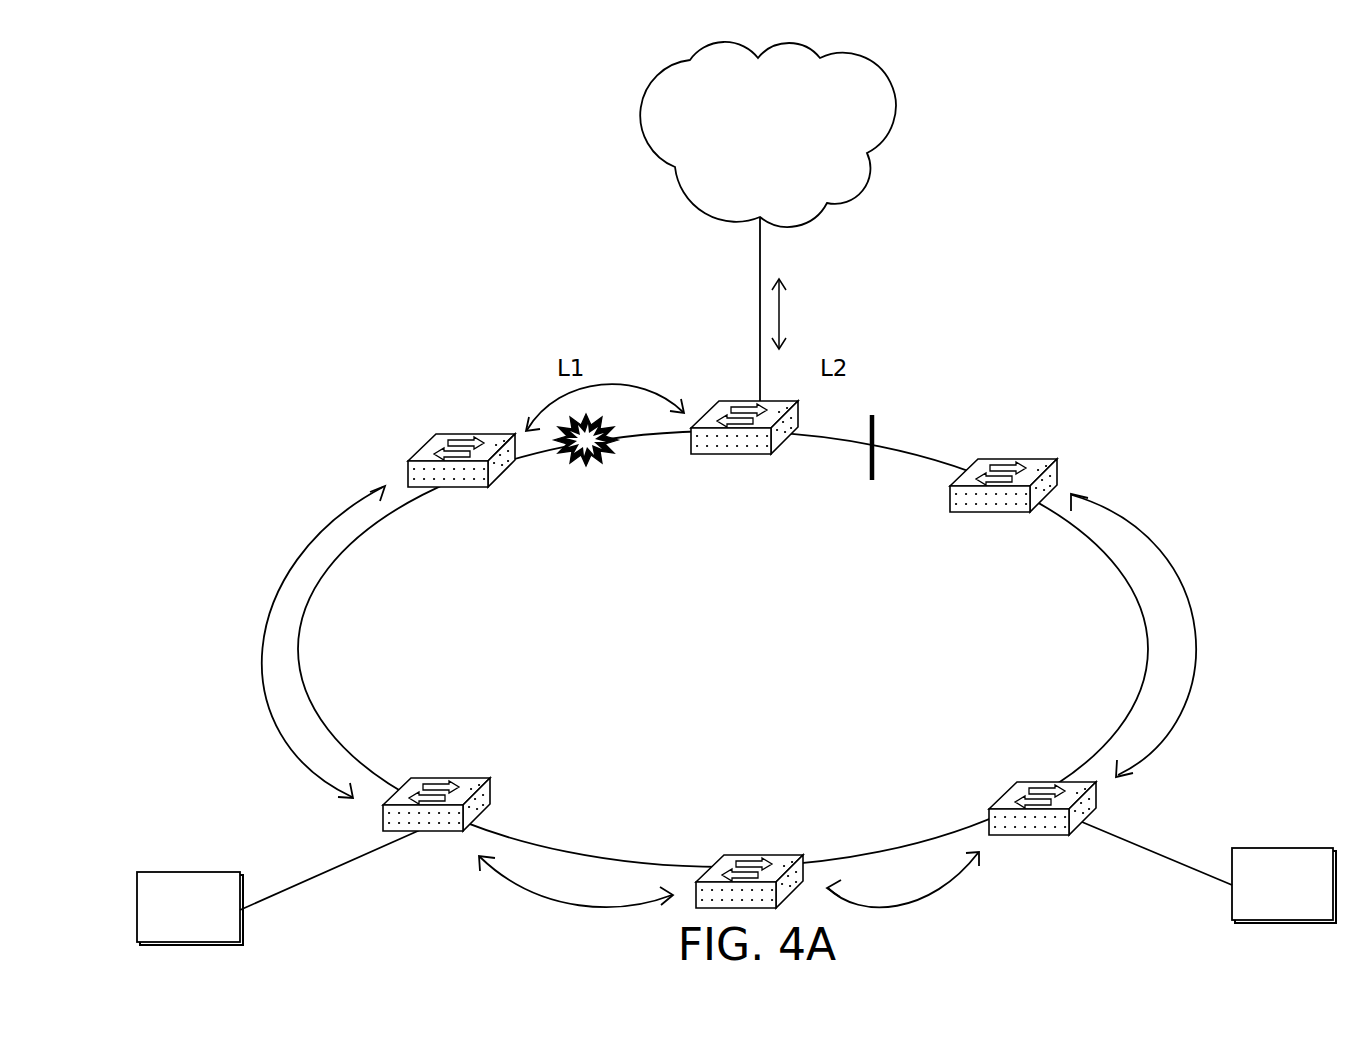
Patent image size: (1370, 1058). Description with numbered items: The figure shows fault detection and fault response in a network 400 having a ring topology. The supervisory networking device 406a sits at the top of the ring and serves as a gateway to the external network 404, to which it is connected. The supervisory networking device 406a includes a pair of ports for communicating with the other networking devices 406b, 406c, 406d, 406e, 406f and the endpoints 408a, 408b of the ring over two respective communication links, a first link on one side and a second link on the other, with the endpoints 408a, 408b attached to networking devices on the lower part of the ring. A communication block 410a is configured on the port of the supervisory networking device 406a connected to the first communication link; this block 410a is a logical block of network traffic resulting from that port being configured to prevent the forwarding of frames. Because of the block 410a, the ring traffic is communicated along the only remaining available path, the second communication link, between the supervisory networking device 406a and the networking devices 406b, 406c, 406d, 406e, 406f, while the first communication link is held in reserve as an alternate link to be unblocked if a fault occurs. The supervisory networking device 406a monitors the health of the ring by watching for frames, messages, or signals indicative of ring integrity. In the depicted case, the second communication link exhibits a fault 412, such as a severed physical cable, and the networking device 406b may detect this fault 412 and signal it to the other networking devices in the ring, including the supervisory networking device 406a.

The network 400 is at (1288, 118).
The external network 404 is at (748, 176).
The supervisory networking device 406a is at (735, 402).
The networking device 406b is at (467, 433).
The networking device 406c is at (463, 780).
The networking device 406d is at (777, 853).
The networking device 406e is at (999, 834).
The networking device 406f is at (1030, 459).
The endpoint 408a is at (164, 917).
The endpoint 408b is at (1259, 896).
The communication block 410a is at (872, 415).
The fault 412 is at (593, 455).